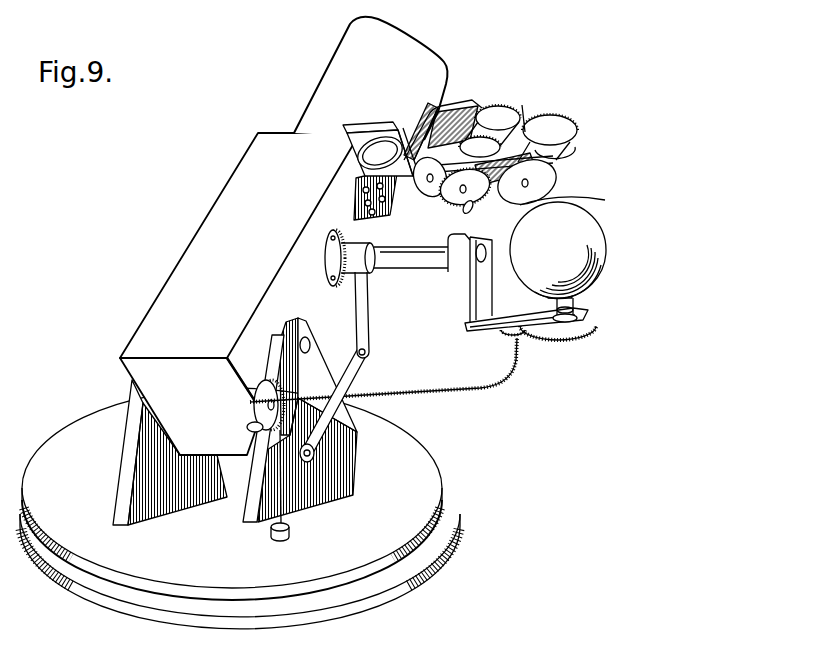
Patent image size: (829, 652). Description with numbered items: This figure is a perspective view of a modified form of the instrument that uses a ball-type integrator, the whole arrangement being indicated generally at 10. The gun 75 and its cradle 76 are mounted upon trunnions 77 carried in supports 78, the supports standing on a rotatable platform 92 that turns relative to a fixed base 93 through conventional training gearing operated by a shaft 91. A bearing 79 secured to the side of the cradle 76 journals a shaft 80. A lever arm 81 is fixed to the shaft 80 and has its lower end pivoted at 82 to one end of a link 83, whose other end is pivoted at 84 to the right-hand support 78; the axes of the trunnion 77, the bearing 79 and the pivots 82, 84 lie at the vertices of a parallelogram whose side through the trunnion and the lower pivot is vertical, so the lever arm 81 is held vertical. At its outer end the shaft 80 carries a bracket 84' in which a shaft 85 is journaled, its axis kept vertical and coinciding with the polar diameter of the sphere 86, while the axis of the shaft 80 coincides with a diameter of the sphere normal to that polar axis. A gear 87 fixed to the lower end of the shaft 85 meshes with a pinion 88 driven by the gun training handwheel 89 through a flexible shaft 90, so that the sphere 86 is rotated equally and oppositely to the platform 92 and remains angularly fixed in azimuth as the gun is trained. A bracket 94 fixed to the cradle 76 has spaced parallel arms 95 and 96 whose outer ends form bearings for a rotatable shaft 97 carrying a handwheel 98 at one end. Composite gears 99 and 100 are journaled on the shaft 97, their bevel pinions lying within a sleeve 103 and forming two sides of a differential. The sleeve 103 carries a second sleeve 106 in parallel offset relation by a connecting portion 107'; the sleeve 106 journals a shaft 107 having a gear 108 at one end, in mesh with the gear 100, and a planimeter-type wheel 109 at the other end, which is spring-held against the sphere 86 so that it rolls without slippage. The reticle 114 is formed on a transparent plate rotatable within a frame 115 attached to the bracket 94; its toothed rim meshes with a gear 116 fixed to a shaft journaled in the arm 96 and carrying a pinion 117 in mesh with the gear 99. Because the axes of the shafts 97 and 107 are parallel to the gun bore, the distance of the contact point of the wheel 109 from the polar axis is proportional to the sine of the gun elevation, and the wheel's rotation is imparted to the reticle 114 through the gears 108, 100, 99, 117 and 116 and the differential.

The drive assembly 10 is at (522, 90).
The gun 75 is at (352, 62).
The cradle 76 is at (230, 195).
The trunnions 77 is at (307, 342).
The supports 78 is at (125, 493).
The bearing 79 is at (324, 258).
The shaft 80 is at (435, 258).
The lever arm 81 is at (364, 333).
The pivot 82 is at (366, 355).
The link 83 is at (350, 375).
The pivot 84 is at (339, 452).
The bracket 84' is at (595, 310).
The shaft 85 is at (578, 297).
The sphere 86 is at (595, 222).
The gear 87 is at (580, 337).
The pinion 88 is at (505, 332).
The gun training handwheel 89 is at (268, 408).
The flexible shaft 90 is at (483, 393).
The shaft 91 is at (284, 507).
The rotatable platform 92 is at (428, 490).
The fixed base 93 is at (417, 555).
The bracket 94 is at (356, 207).
The arm 95 is at (492, 188).
The arm 96 is at (441, 112).
The shaft 97 is at (466, 194).
The handwheel 98 is at (462, 212).
The composite gear 99 is at (467, 130).
The composite gear 100 is at (504, 104).
The sleeve 103 is at (563, 127).
The second sleeve 106 is at (553, 164).
The shaft 107 is at (553, 182).
The connecting portion 107' is at (536, 113).
The gear 108 is at (582, 139).
The planimeter-type wheel 109 is at (556, 199).
The reticle 114 is at (390, 150).
The frame 115 is at (347, 135).
The gear 116 is at (417, 135).
The pinion 117 is at (422, 124).